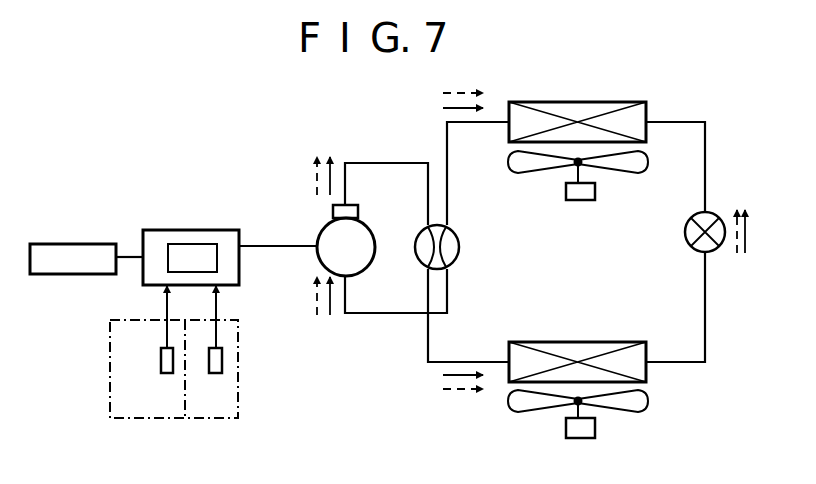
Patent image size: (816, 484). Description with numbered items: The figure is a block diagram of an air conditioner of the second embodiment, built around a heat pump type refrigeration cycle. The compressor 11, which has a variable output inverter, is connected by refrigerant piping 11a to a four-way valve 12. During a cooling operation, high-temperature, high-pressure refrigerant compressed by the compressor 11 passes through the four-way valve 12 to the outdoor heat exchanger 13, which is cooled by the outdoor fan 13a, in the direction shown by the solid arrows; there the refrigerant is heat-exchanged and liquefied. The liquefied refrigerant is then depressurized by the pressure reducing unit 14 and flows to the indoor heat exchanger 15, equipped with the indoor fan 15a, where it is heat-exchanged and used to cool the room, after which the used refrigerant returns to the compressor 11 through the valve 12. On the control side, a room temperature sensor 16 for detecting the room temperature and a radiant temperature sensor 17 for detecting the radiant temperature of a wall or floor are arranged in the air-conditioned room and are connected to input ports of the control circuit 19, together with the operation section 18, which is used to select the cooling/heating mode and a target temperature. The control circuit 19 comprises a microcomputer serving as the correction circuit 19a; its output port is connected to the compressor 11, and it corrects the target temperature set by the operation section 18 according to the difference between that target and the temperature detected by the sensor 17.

The compressor 11 is at (320, 230).
The refrigerant pipe 11a is at (662, 110).
The four-way valve 12 is at (425, 232).
The outdoor heat exchanger 13 is at (577, 102).
The outdoor fan 13a is at (631, 172).
The pressure reducing unit 14 is at (691, 246).
The indoor heat exchanger 15 is at (578, 342).
The indoor fan 15a is at (634, 412).
The room temperature sensor 16 is at (165, 374).
The radiant temperature sensor 17 is at (213, 374).
The operation section 18 is at (78, 244).
The control circuit 19 is at (190, 230).
The correction circuit 19a is at (217, 270).